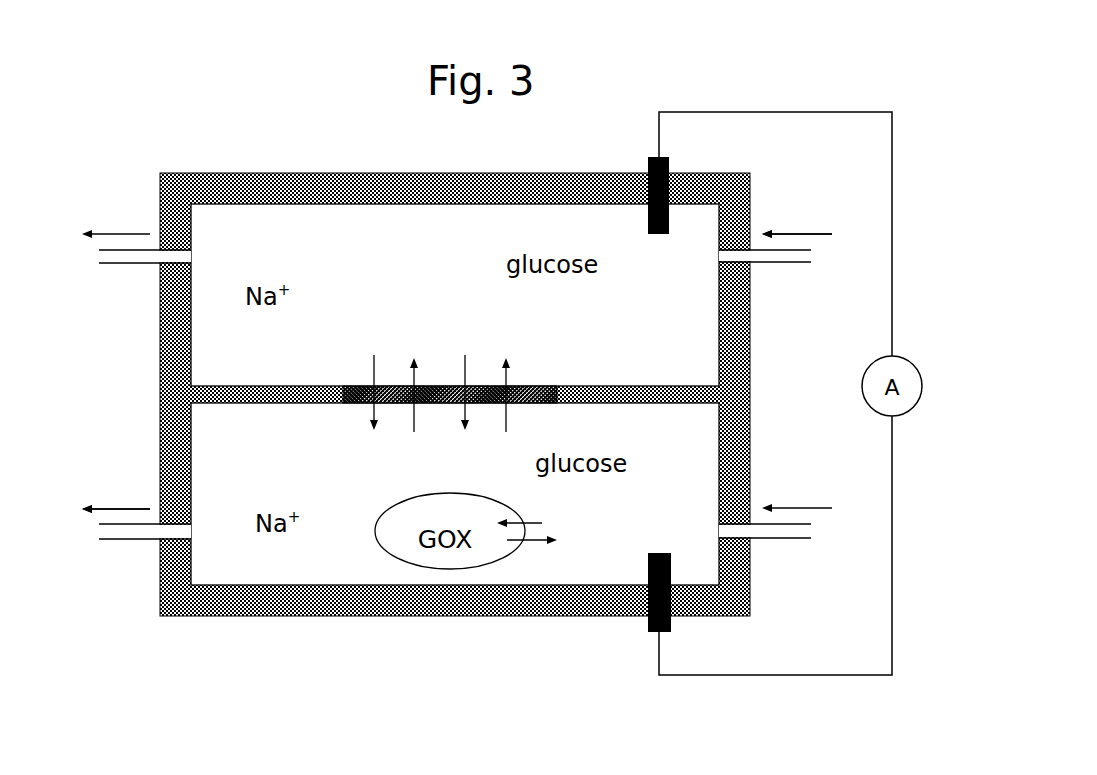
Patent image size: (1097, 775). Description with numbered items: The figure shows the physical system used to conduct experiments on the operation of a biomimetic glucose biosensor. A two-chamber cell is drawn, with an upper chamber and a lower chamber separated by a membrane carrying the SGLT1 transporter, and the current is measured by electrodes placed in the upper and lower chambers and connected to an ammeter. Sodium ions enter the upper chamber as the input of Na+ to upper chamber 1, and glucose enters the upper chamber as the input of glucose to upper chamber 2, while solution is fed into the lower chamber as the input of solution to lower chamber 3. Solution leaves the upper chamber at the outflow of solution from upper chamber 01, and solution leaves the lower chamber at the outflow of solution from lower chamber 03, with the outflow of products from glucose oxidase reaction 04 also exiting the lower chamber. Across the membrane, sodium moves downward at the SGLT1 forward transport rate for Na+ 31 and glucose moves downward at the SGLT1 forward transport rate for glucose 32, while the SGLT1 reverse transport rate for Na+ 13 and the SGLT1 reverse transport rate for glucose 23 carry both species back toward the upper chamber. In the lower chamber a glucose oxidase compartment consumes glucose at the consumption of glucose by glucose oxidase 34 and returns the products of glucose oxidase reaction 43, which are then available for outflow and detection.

The outflow of solution from upper chamber 01 is at (115, 214).
The outflow of solution from lower chamber 03 is at (110, 489).
The outflow of products from glucose oxidase reaction 04 is at (116, 489).
The input of Na+ to upper chamber 1 is at (797, 215).
The input of glucose to upper chamber 2 is at (819, 215).
The input of solution to lower chamber 3 is at (802, 489).
The SGLT1 reverse transport rate for Na+ 13 is at (412, 381).
The SGLT1 reverse transport rate for glucose 23 is at (504, 381).
The SGLT1 forward transport rate for Na+ 31 is at (372, 410).
The SGLT1 forward transport rate for glucose 32 is at (464, 410).
The products of glucose oxidase reaction 43 is at (529, 512).
The consumption of glucose by glucose oxidase 34 is at (534, 554).